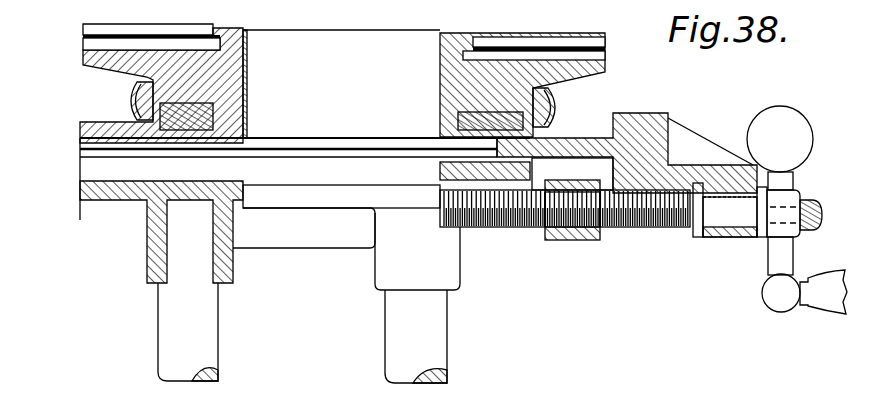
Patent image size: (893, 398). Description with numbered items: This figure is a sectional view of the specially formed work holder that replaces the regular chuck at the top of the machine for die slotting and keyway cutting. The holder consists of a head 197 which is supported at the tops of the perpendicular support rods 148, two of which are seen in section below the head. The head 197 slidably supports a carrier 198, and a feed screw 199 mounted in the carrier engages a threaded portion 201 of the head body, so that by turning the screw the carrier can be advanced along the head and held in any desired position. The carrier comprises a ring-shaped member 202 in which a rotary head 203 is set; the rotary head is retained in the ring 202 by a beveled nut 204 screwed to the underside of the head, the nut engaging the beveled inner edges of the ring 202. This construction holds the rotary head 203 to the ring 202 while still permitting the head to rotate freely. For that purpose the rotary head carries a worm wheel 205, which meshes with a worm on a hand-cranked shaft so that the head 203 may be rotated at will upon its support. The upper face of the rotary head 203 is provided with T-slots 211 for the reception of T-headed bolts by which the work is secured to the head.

The support rods 148 is at (200, 309).
The head 197 is at (309, 233).
The carrier 198 is at (620, 127).
The feed screw 199 is at (666, 228).
The threaded portion 201 is at (578, 243).
The ring-shaped member 202 is at (247, 113).
The rotary head 203 is at (355, 30).
The beveled nut 204 is at (206, 143).
The worm wheel 205 is at (130, 100).
The T-slots 211 is at (183, 43).